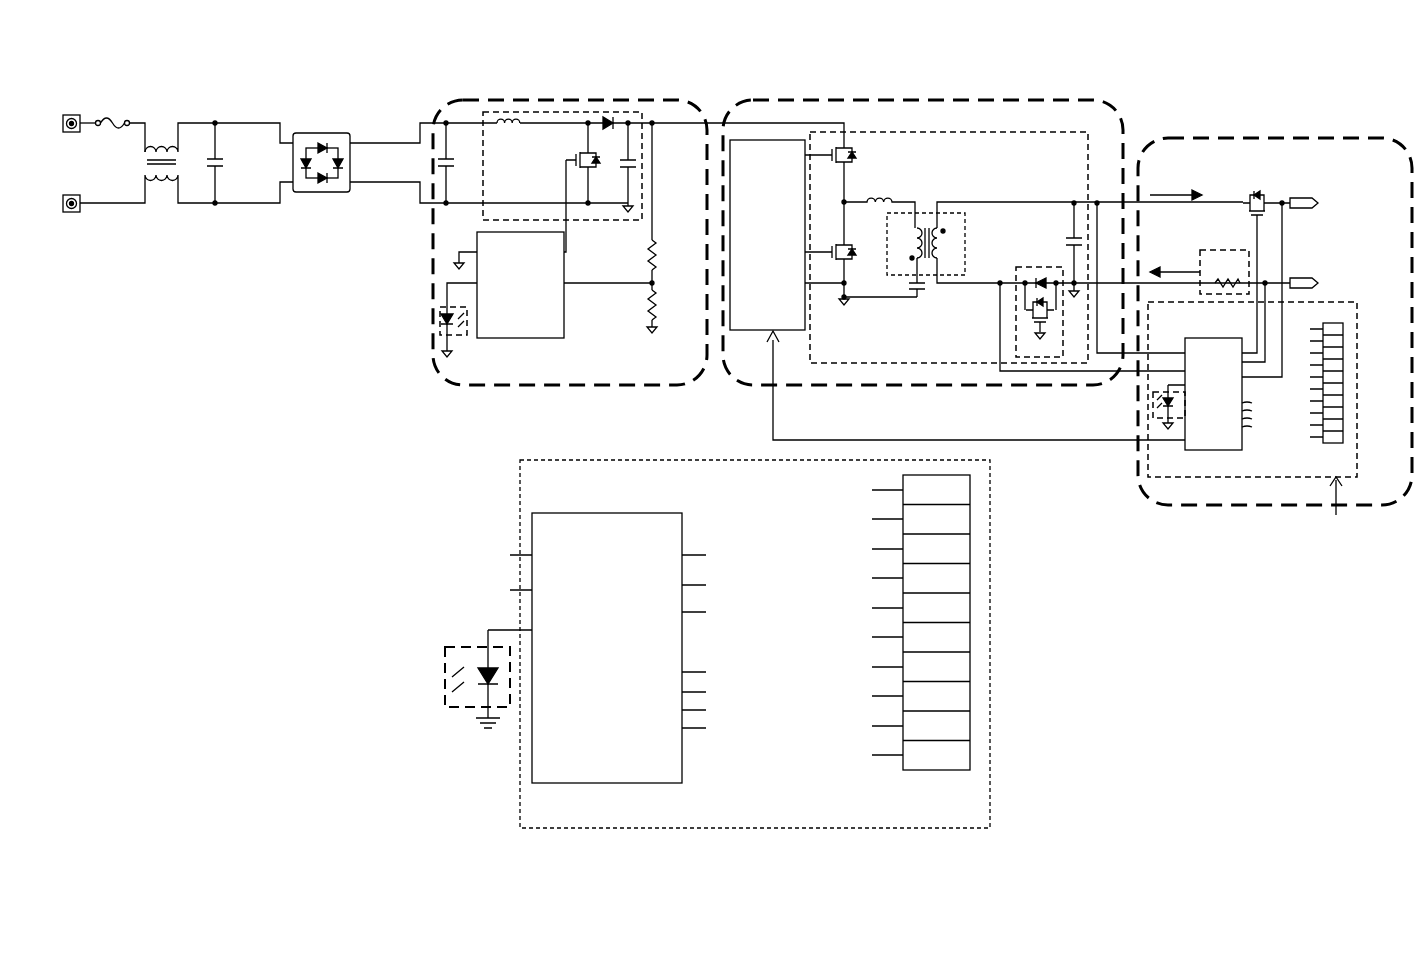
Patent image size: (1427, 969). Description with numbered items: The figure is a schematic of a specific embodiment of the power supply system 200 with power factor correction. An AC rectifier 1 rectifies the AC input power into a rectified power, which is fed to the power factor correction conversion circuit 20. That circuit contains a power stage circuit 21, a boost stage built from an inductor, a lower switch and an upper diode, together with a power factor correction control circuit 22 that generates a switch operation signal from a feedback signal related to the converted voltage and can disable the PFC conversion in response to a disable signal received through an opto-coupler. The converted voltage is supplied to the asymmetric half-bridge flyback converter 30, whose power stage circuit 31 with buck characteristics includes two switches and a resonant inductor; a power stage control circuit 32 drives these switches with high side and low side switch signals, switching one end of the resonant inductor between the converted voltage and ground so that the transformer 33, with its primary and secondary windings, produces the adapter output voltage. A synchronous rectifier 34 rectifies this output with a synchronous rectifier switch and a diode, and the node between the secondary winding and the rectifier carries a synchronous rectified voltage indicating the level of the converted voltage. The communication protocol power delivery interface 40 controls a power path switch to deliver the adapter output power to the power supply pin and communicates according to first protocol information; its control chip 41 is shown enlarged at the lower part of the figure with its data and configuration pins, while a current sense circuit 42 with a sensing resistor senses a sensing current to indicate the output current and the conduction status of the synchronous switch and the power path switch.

The power supply system with power factor correction 200 is at (1330, 45).
The AC rectifier 1 is at (320, 133).
The power factor correction conversion circuit 20 is at (567, 100).
The power stage circuit 21 is at (511, 195).
The power factor correction control circuit 22 is at (501, 333).
The asymmetric half-bridge flyback converter 30 is at (897, 100).
The power stage circuit with buck characteristics 31 is at (1064, 158).
The power stage control circuit 32 is at (752, 328).
The transformer 33 is at (934, 214).
The synchronous rectifier 34 is at (1040, 353).
The communication protocol power delivery interface 40 is at (1240, 135).
The control chip 41 is at (1178, 328).
The current sense circuit 42 is at (1230, 250).